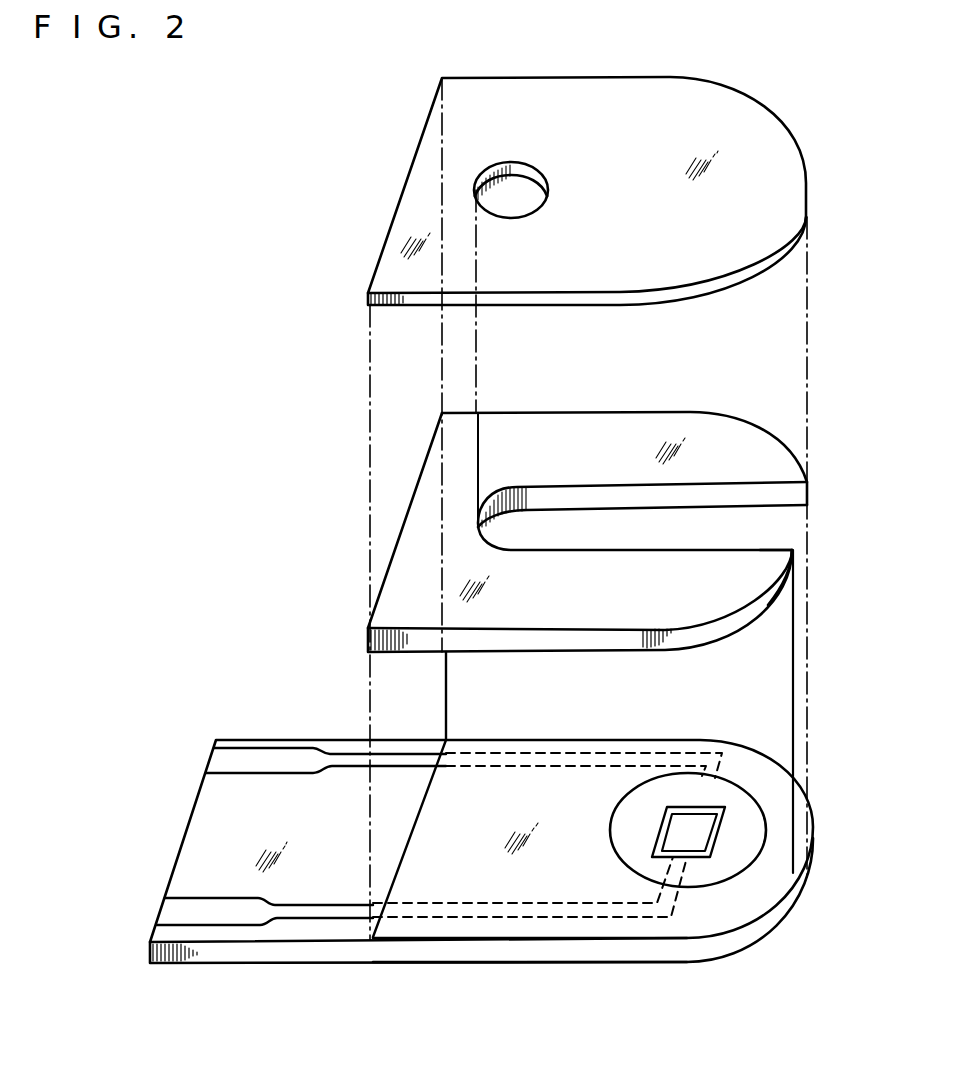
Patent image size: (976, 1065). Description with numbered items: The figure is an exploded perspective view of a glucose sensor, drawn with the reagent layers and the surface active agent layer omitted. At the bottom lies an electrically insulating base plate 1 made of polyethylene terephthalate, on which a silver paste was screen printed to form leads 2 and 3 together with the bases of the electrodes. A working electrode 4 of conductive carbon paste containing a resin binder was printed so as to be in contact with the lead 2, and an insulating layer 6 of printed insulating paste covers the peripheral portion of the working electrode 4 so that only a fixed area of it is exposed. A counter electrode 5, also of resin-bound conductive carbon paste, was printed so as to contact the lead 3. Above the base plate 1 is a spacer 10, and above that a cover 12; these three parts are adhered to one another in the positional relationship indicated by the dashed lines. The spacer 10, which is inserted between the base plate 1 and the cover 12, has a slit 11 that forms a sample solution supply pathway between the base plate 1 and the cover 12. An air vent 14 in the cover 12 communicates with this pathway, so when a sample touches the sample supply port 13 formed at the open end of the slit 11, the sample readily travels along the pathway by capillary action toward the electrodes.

The base plate 1 is at (232, 823).
The lead 2 is at (177, 910).
The lead 3 is at (228, 765).
The working electrode 4 is at (692, 833).
The counter electrode 5 is at (717, 793).
The insulating layer 6 is at (480, 890).
The spacer 10 is at (432, 488).
The slit 11 is at (705, 527).
The cover 12 is at (420, 202).
The sample supply port 13 is at (792, 528).
The air vent 14 is at (510, 192).